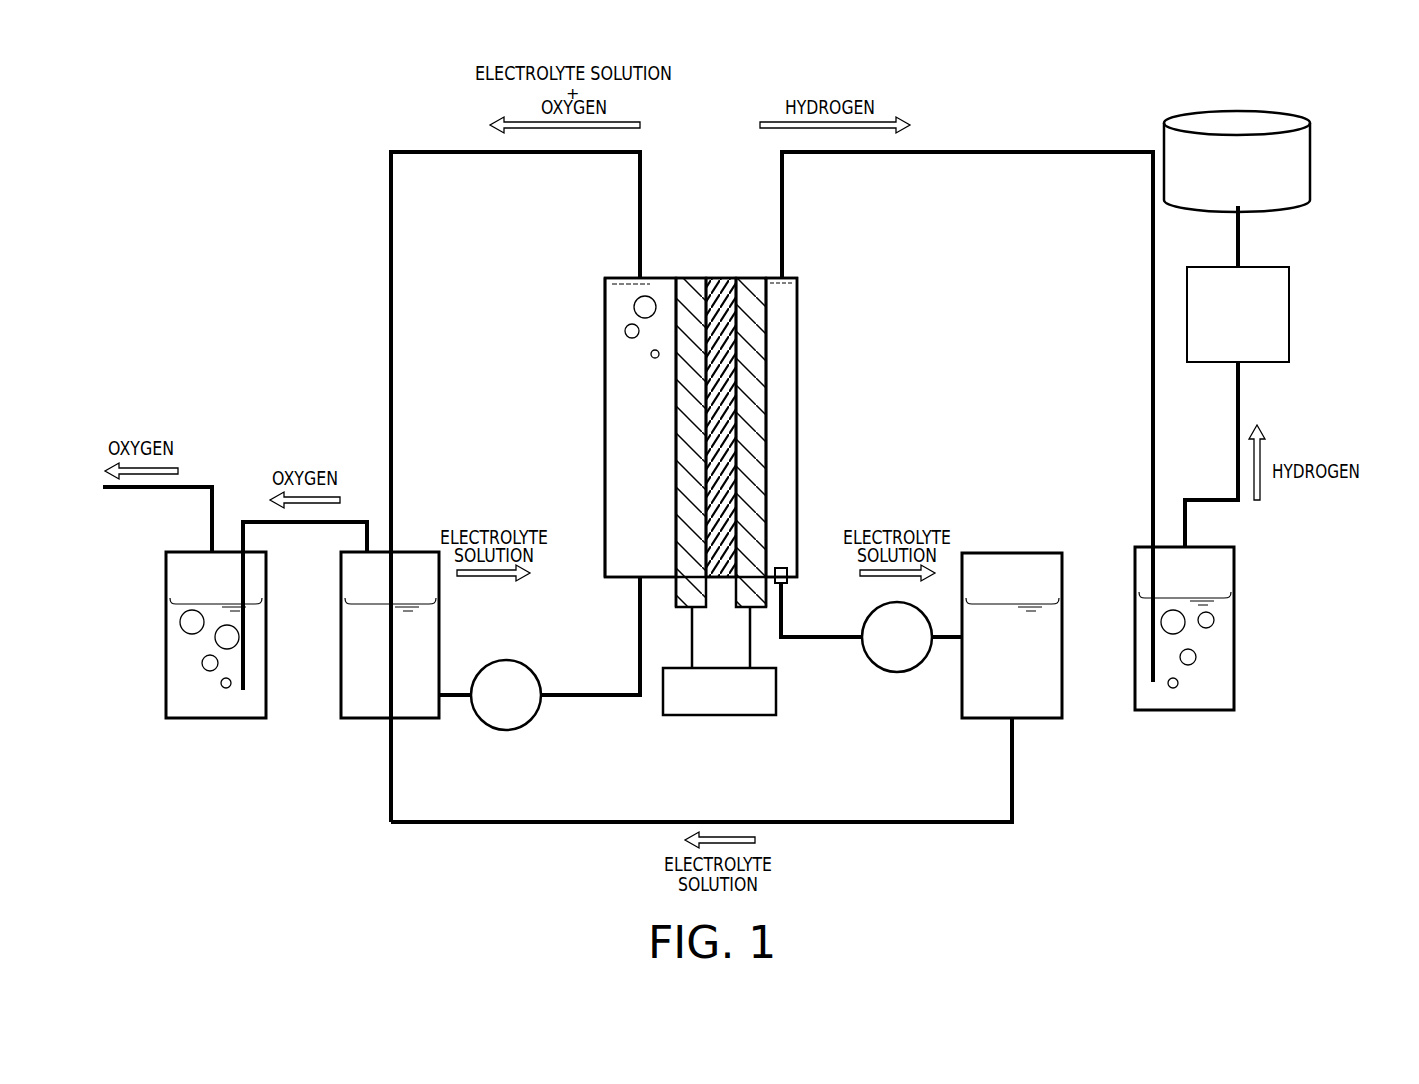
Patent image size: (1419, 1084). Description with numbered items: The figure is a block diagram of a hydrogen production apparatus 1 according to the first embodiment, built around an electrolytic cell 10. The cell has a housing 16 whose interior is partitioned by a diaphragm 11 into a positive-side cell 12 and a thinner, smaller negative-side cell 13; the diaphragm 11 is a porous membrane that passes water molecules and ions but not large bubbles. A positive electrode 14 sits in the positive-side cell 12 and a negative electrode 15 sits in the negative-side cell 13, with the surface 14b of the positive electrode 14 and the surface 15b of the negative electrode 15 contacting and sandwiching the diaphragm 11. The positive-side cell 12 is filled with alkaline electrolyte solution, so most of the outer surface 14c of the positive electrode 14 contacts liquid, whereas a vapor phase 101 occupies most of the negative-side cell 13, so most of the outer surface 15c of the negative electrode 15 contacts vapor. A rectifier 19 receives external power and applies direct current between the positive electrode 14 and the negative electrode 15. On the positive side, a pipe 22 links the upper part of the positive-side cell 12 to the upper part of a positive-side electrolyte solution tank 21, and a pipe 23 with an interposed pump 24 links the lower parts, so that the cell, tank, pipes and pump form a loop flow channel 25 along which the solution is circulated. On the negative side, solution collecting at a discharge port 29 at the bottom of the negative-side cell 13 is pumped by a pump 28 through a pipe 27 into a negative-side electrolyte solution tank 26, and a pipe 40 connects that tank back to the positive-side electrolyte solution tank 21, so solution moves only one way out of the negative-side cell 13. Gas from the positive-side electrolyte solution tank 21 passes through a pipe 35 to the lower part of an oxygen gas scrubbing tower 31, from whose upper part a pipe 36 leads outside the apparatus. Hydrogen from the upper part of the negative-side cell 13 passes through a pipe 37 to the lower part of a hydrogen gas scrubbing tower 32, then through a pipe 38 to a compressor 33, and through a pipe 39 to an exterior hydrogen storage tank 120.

The hydrogen production apparatus 1 is at (946, 106).
The electrolytic cell 10 is at (792, 260).
The diaphragm 11 is at (719, 280).
The positive-side cell 12 is at (618, 386).
The negative-side cell 13 is at (783, 365).
The positive electrode 14 is at (690, 280).
The surface of the positive electrode 14b is at (700, 566).
The surface of the positive electrode 14c is at (676, 540).
The negative electrode 15 is at (750, 280).
The surface of the negative electrode 15b is at (745, 501).
The surface of the negative electrode 15c is at (768, 455).
The housing 16 is at (606, 496).
The rectifier 19 is at (720, 716).
The positive-side electrolyte solution tank 21 is at (362, 720).
The pipe 22 is at (391, 260).
The pipe 23 is at (585, 698).
The pump 24 is at (506, 731).
The flow channel 25 is at (436, 133).
The negative-side electrolyte solution tank 26 is at (1046, 720).
The pipe 27 is at (812, 640).
The pump 28 is at (897, 673).
The discharge port 29 is at (788, 580).
The oxygen gas scrubbing tower 31 is at (196, 720).
The hydrogen gas scrubbing tower 32 is at (1213, 712).
The compressor 33 is at (1290, 314).
The pipe 35 is at (305, 525).
The pipe 36 is at (128, 490).
The pipe 37 is at (968, 155).
The pipe 38 is at (1239, 387).
The pipe 39 is at (1240, 232).
The pipe 40 is at (845, 825).
The vapor phase 101 is at (783, 408).
The hydrogen storage tank 120 is at (1312, 163).